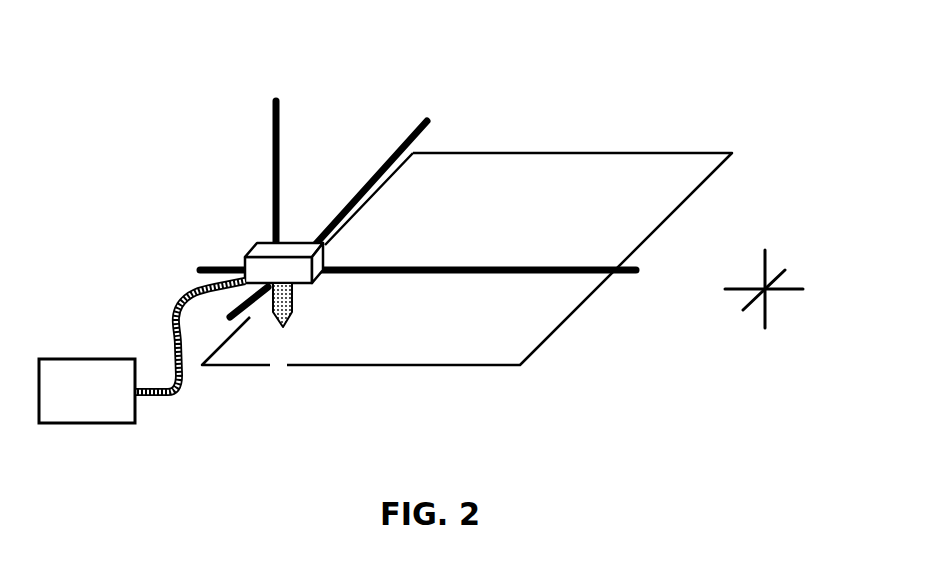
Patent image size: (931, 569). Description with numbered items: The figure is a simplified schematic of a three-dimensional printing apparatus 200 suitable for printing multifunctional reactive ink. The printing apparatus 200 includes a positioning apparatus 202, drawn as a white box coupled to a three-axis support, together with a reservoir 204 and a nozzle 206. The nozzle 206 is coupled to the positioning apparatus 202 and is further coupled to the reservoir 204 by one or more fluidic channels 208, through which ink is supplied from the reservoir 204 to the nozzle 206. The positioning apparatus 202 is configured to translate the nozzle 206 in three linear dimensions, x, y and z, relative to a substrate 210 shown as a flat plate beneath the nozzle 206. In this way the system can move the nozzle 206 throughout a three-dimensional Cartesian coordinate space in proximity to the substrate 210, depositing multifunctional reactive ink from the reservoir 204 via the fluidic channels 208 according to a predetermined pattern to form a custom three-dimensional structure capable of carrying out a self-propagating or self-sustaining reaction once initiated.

The 3D printing apparatus 200 is at (170, 99).
The positioning apparatus 202 is at (221, 239).
The reservoir 204 is at (108, 406).
The nozzle 206 is at (278, 314).
The fluidic channel 208 is at (172, 308).
The substrate 210 is at (480, 254).